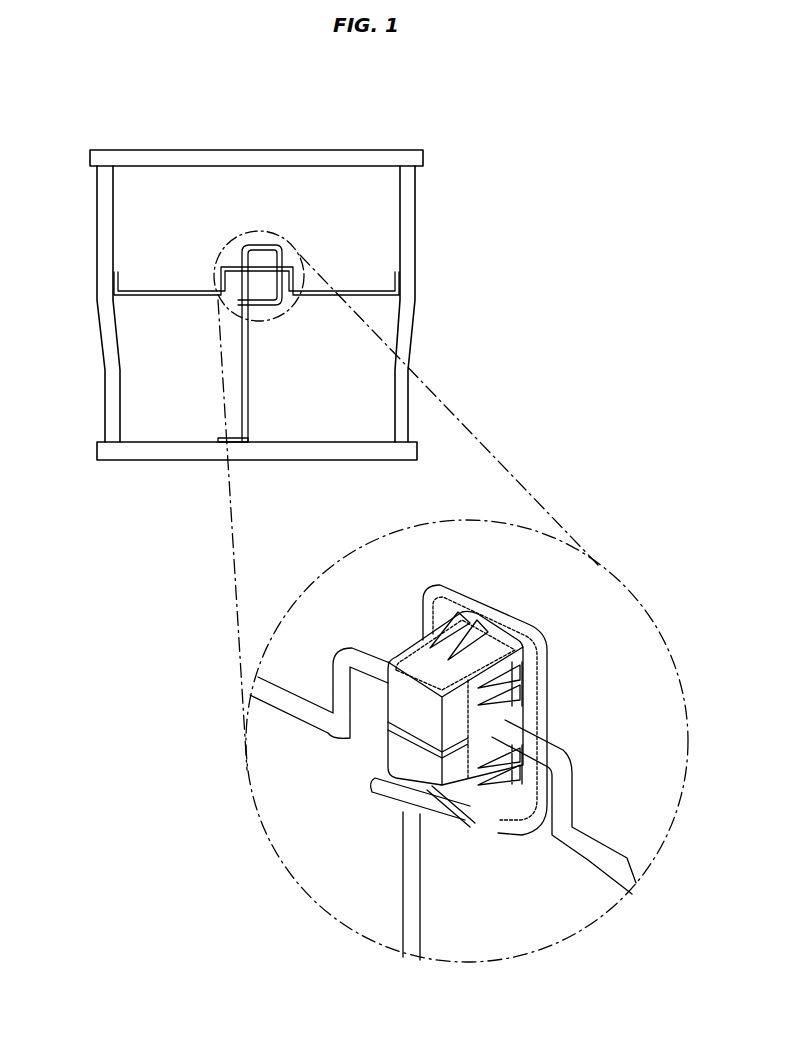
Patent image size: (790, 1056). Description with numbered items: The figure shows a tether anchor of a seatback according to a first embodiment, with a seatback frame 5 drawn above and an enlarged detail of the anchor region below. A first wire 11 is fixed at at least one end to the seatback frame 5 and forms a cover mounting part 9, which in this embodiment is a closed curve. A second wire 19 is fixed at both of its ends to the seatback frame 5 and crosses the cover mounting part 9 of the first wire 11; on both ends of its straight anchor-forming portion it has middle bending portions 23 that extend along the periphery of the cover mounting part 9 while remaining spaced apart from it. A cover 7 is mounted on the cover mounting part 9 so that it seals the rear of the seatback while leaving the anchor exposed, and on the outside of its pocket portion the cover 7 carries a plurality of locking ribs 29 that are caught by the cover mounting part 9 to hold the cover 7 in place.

The seatback frame 5 is at (105, 227).
The second wire 19 is at (150, 290).
The first wire 11 is at (250, 380).
The cover 7 is at (390, 656).
The cover mounting part 9 is at (548, 718).
The middle bending portion 23 is at (333, 688).
The locking rib 29 is at (482, 630).